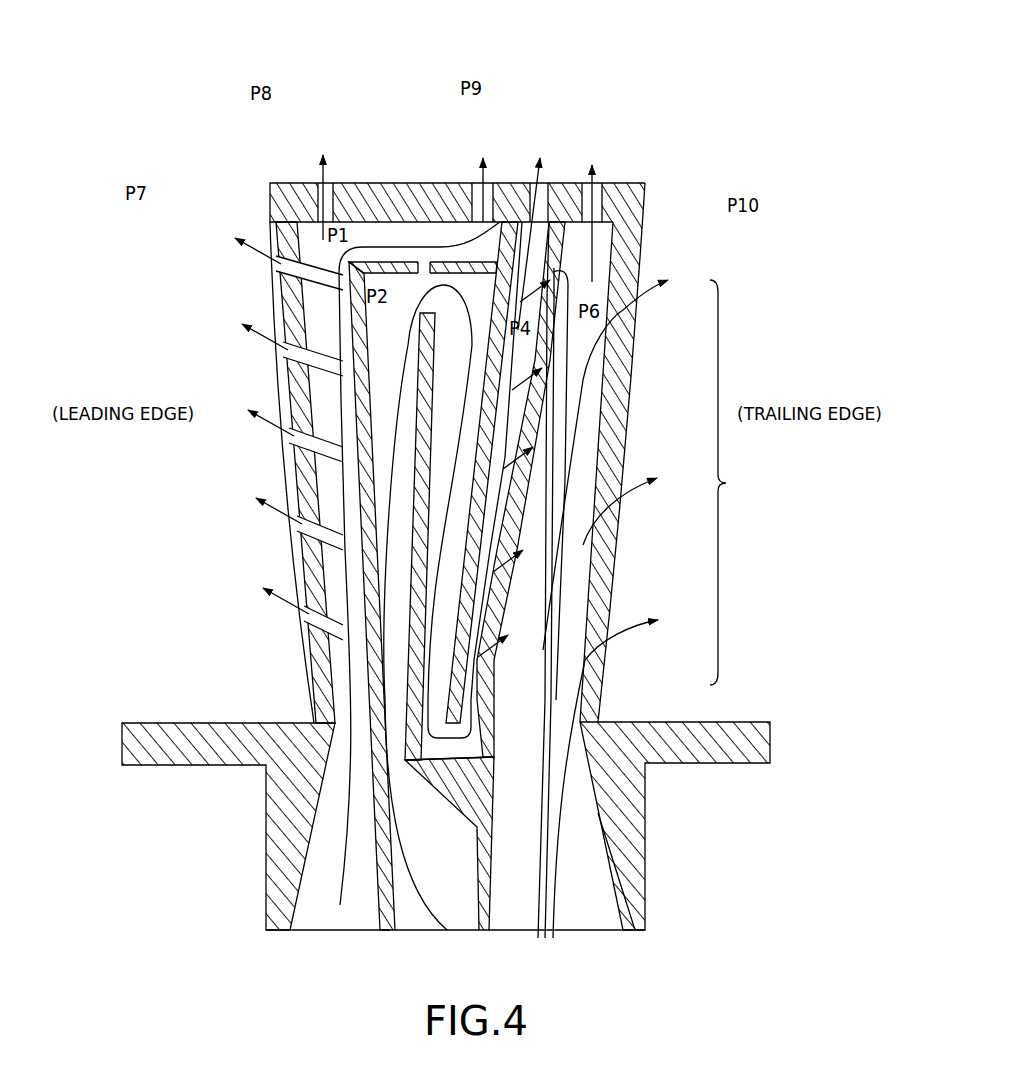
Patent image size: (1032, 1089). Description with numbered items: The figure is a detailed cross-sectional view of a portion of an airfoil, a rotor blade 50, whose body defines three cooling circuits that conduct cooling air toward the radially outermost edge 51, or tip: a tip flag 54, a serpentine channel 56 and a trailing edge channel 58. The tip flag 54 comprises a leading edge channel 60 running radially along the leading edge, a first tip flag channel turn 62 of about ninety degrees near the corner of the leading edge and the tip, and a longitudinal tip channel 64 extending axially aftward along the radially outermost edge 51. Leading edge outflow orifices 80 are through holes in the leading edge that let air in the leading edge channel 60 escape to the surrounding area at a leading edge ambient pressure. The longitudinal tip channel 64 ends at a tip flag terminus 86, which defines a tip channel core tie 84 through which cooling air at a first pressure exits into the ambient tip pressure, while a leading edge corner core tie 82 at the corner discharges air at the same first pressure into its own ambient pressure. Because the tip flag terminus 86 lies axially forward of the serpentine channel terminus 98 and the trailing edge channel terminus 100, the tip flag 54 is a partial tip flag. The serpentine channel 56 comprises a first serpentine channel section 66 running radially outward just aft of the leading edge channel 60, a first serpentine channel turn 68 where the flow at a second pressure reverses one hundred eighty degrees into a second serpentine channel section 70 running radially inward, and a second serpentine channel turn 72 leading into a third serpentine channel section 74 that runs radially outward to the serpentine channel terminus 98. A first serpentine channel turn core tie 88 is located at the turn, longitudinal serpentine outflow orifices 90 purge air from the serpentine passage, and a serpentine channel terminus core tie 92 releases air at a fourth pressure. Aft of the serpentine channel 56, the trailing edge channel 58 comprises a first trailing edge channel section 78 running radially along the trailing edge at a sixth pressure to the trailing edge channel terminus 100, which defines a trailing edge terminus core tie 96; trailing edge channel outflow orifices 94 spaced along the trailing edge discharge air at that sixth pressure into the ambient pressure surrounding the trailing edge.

The rotor blade 50 is at (652, 58).
The radially outermost edge 51 is at (402, 290).
The tip flag 54 is at (328, 913).
The serpentine channel 56 is at (437, 913).
The trailing edge channel 58 is at (567, 871).
The leading edge channel 60 is at (338, 695).
The first tip flag channel turn 62 is at (297, 247).
The longitudinal tip channel 64 is at (362, 235).
The first serpentine channel section 66 is at (385, 740).
The first serpentine channel turn 68 is at (421, 270).
The second serpentine channel section 70 is at (518, 750).
The second serpentine channel turn 72 is at (480, 745).
The third serpentine channel section 74 is at (487, 683).
The first trailing edge channel section 78 is at (523, 643).
The leading edge outflow orifices 80 is at (291, 445).
The leading edge corner core tie 82 is at (303, 183).
The tip channel core tie 84 is at (492, 205).
The tip flag terminus 86 is at (550, 246).
The first serpentine channel turn core tie 88 is at (428, 262).
The longitudinal serpentine outflow orifices 90 is at (550, 457).
The serpentine channel terminus core tie 92 is at (538, 193).
The trailing edge channel outflow orifices 94 is at (655, 609).
The trailing edge terminus core tie 96 is at (595, 192).
The serpentine channel terminus 98 is at (556, 196).
The trailing edge channel terminus 100 is at (612, 222).